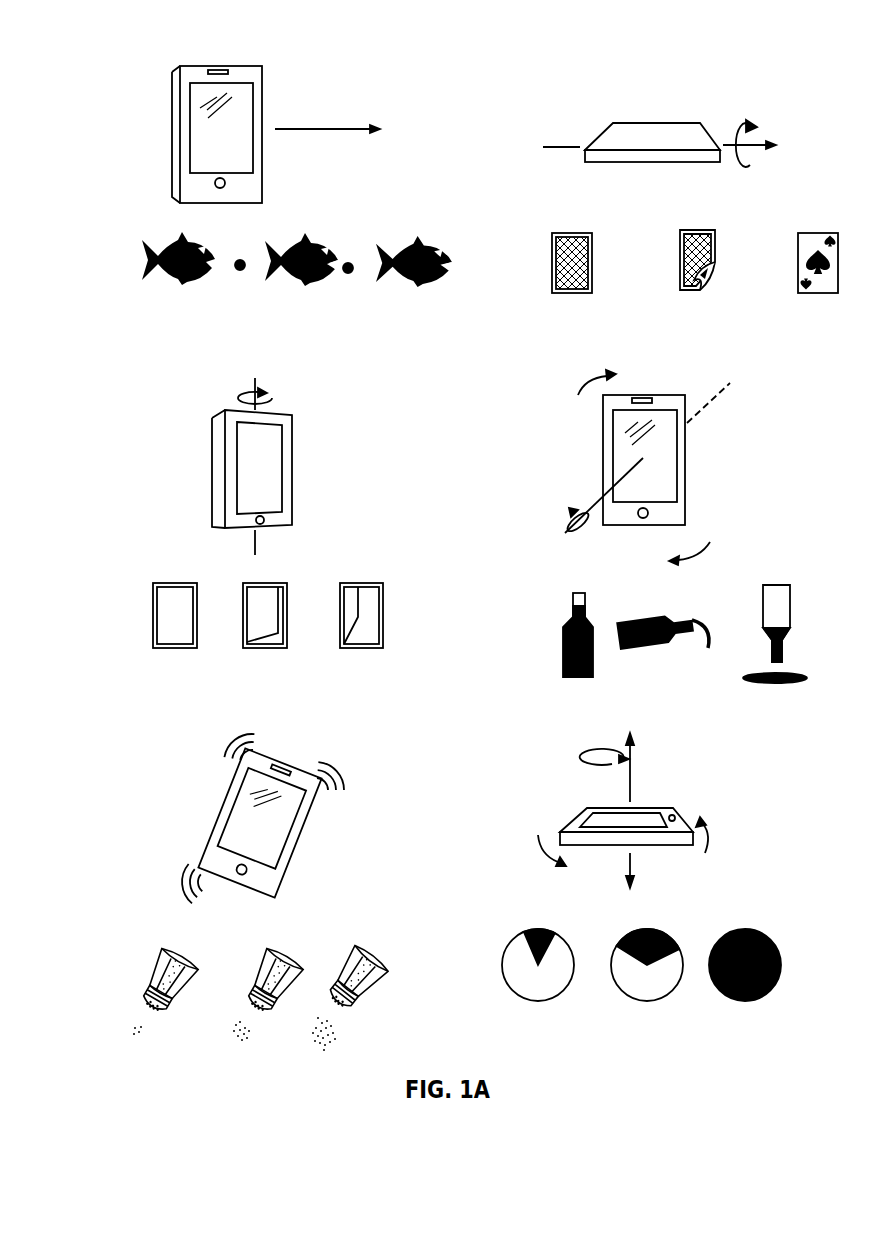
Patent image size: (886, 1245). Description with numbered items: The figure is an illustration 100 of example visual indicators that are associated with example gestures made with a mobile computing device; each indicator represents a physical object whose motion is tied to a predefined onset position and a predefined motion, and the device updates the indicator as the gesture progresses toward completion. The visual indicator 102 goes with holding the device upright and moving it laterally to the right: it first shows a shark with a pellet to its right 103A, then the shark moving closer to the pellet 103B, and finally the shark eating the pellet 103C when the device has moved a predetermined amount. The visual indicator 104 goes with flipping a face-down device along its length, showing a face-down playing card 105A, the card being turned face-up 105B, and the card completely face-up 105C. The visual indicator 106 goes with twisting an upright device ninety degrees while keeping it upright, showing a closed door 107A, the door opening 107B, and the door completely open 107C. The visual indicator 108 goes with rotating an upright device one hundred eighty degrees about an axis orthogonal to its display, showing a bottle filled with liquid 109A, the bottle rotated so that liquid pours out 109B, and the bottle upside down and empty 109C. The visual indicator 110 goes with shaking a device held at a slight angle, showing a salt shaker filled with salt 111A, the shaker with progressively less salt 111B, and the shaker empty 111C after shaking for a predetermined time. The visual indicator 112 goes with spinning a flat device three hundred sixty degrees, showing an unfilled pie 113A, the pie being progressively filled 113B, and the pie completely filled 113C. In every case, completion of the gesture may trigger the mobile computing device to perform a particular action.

The illustration 100 is at (444, 539).
The visual indicator 102 is at (219, 134).
The shark and pellet 103A is at (137, 245).
The shark moving closer to the pellet 103B is at (279, 245).
The shark eating the pellet 103C is at (393, 248).
The visual indicator 104 is at (617, 142).
The face-down playing card 105A is at (529, 249).
The playing card being turned face-up 105B is at (658, 247).
The playing card completely face-up 105C is at (781, 250).
The visual indicator 106 is at (234, 466).
The closed door 107A is at (134, 599).
The door opening 107B is at (221, 596).
The door completely open 107C is at (334, 592).
The visual indicator 108 is at (629, 467).
The bottle filled with liquid 109A is at (543, 621).
The bottle pouring liquid 109B is at (647, 609).
The bottle upside down and empty 109C is at (742, 634).
The visual indicator 110 is at (254, 818).
The salt shaker filled with salt 111A is at (135, 966).
The salt shaker with progressively less salt 111B is at (245, 971).
The empty salt shaker 111C is at (336, 975).
The visual indicator 112 is at (628, 810).
The unfilled pie 113A is at (502, 948).
The pie being progressively filled 113B is at (614, 944).
The completely filled pie 113C is at (712, 950).